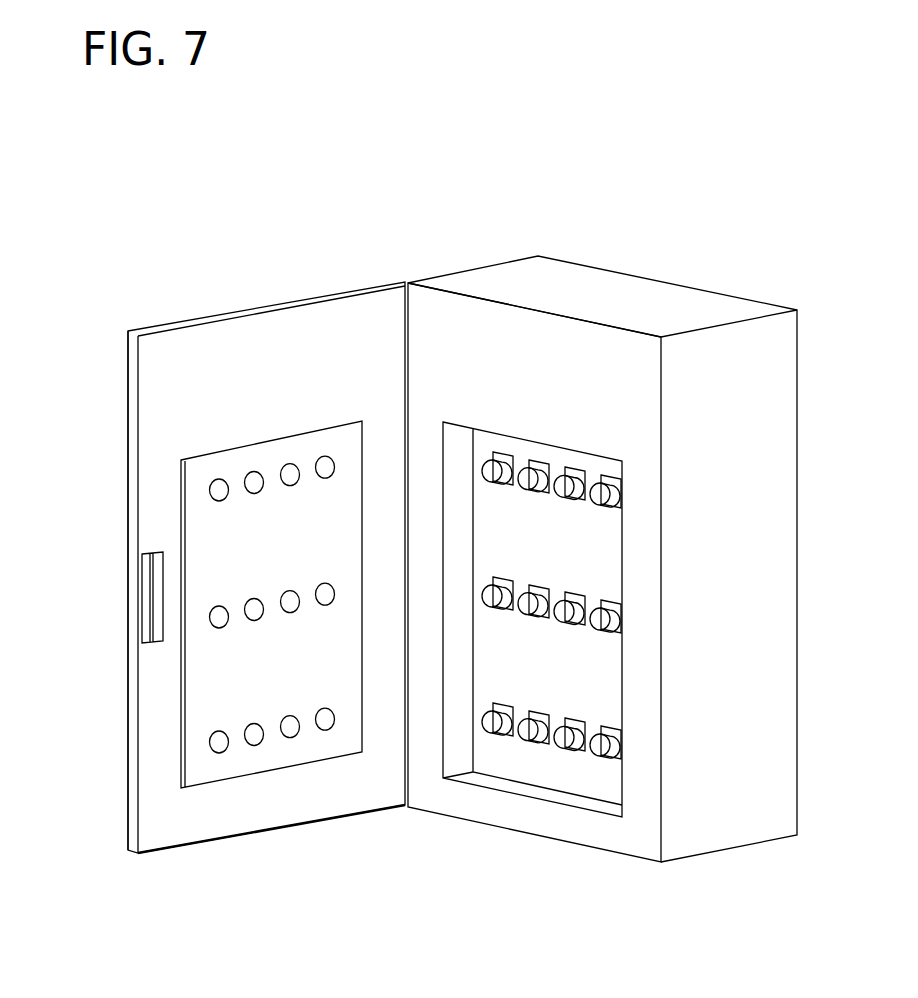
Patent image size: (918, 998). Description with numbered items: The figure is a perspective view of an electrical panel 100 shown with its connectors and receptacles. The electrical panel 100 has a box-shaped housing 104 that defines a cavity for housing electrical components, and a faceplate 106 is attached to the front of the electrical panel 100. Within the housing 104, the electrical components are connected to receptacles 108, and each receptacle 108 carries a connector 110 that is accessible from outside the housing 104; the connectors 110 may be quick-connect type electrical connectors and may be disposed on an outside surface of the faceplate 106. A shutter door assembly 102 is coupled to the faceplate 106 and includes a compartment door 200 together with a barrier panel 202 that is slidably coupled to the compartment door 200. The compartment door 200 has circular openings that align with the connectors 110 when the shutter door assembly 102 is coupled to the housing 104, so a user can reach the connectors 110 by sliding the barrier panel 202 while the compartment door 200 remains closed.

The electrical panel 100 is at (388, 211).
The shutter door assembly 102 is at (156, 864).
The housing 104 is at (507, 275).
The faceplate 106 is at (430, 322).
The receptacle 108 is at (592, 490).
The connector 110 is at (611, 477).
The compartment door 200 is at (158, 720).
The barrier panel 202 is at (315, 762).